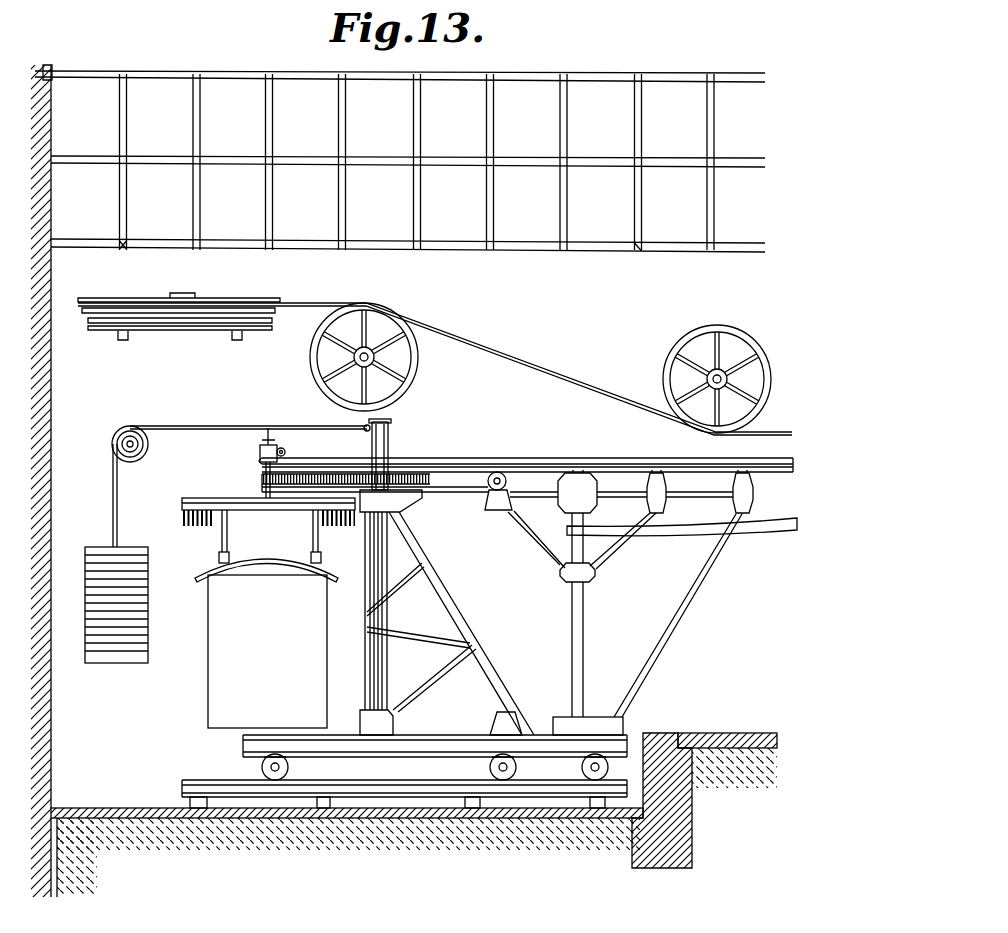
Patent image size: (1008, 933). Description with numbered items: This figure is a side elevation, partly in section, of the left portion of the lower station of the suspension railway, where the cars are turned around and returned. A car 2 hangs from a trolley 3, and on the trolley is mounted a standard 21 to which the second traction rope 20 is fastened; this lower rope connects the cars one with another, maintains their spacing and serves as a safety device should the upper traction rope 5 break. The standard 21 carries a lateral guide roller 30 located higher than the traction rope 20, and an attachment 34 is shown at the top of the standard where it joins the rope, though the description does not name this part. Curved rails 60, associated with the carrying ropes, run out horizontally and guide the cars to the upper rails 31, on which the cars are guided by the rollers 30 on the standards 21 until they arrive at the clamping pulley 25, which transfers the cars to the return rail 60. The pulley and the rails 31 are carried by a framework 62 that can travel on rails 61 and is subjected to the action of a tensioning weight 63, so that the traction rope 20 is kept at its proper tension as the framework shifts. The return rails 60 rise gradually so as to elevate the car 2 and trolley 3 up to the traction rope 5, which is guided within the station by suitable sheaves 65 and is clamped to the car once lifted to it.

The car 2 is at (215, 653).
The trolley 3 is at (190, 506).
The upper traction rope 5 is at (522, 368).
The second traction rope 20 is at (345, 472).
The standard 21 is at (267, 483).
The clamping pulley 25 is at (457, 483).
The lateral guide roller 30 is at (286, 453).
The middle rail 31 is at (603, 458).
The cable attachment 34 is at (272, 443).
The curved rail 60 is at (655, 532).
The rails 61 is at (192, 787).
The framework 62 is at (462, 615).
The tensioning weight 63 is at (142, 620).
The sheaves 65 is at (160, 310).